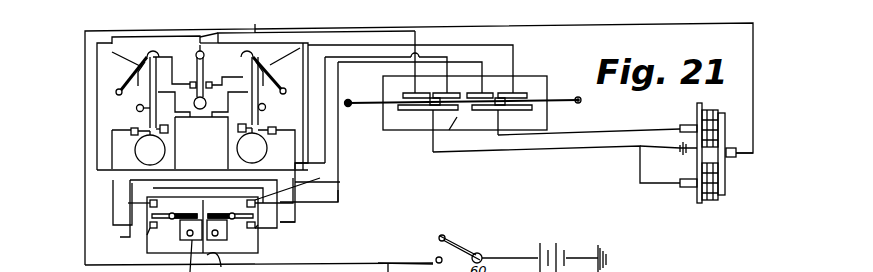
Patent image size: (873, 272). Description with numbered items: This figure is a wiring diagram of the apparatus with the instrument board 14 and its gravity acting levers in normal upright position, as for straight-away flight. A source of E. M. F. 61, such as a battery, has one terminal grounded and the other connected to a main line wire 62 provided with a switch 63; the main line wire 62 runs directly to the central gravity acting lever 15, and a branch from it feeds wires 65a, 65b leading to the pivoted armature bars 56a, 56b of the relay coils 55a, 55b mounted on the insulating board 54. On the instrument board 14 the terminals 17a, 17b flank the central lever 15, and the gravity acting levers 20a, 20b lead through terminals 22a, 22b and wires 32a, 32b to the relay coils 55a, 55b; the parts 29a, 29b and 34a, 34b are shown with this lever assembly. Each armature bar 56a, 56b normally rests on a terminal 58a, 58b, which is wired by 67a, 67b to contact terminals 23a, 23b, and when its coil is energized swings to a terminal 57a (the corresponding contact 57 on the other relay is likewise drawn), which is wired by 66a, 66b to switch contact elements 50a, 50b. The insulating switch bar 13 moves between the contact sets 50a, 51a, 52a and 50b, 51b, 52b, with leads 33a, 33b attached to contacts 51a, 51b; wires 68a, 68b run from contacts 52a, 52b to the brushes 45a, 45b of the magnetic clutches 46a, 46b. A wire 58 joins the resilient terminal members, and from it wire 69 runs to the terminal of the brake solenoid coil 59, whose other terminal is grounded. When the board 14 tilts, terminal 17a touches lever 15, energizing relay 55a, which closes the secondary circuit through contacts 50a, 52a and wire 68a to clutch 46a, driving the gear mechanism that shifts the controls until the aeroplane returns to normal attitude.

The insulating switch bar 13 is at (559, 96).
The instrument board 14 is at (106, 80).
The central gravity acting lever 15 is at (200, 103).
The terminal 17a is at (212, 82).
The terminal 17b is at (197, 70).
The gravity acting lever 20a is at (252, 145).
The gravity acting lever 20b is at (150, 148).
The terminal 22a is at (236, 126).
The terminal 22b is at (172, 120).
The contact terminal 23a is at (282, 138).
The contact terminal 23b is at (132, 138).
The lever 29a is at (265, 110).
The lever 29b is at (138, 110).
The wire 32a is at (201, 143).
The wire 32b is at (175, 149).
The lead 33a is at (396, 129).
The lead 33b is at (136, 37).
The conductor 34a is at (250, 44).
The conductor 34b is at (172, 62).
The brush 45a is at (685, 152).
The brush 45b is at (699, 200).
The clutch 46a is at (708, 110).
The clutch 46b is at (718, 200).
The contact element 50a is at (470, 93).
The contact element 50b is at (383, 56).
The contact element 51a is at (527, 92).
The contact element 51b is at (255, 29).
The contact element 52a is at (502, 112).
The contact element 52b is at (419, 112).
The insulating board 54 is at (449, 130).
The relay coil 55a is at (217, 240).
The relay coil 55b is at (182, 240).
The armature bar 56a is at (236, 214).
The armature bar 56b is at (183, 210).
The contact 57 is at (135, 204).
The terminal 57a is at (287, 186).
The wire 58 is at (184, 112).
The terminal 58a is at (257, 228).
The terminal 58b is at (147, 235).
The solenoid coil 59 is at (730, 157).
The source of E. M. F. 61 is at (551, 246).
The main line wire 62 is at (403, 258).
The switch 63 is at (466, 247).
The wire 65a is at (206, 198).
The wire 65b is at (193, 198).
The wire 66a is at (336, 186).
The wire 66b is at (324, 149).
The wire 67a is at (296, 222).
The wire 67b is at (112, 188).
The wire 68a is at (598, 137).
The wire 68b is at (546, 152).
The wire 69 is at (620, 22).